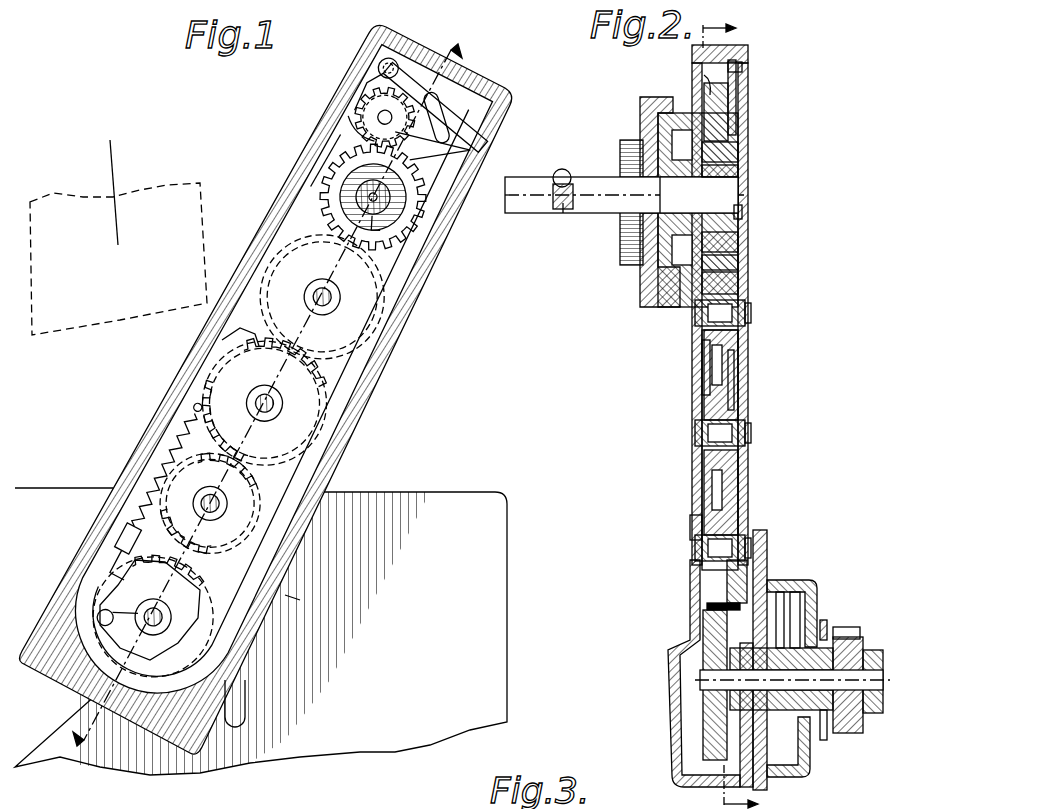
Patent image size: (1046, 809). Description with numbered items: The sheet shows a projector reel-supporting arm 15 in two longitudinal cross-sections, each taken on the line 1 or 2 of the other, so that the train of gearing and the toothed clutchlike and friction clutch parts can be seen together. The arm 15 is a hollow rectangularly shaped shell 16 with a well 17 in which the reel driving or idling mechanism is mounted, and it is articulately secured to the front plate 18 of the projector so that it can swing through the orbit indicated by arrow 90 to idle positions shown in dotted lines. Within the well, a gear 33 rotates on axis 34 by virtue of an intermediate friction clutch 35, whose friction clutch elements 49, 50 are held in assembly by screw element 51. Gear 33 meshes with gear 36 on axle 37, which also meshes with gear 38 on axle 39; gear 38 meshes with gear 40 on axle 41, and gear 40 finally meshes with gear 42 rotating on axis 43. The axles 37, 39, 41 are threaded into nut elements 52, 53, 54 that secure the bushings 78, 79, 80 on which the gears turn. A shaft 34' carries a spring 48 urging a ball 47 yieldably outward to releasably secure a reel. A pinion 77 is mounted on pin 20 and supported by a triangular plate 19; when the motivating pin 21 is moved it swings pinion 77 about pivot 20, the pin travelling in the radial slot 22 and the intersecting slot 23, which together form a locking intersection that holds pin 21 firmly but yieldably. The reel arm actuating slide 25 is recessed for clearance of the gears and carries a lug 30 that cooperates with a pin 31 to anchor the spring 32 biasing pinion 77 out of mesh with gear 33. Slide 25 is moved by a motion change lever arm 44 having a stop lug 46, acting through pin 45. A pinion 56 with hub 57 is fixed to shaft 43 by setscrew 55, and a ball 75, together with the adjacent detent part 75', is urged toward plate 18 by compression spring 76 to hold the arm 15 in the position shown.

In FIG. 2, the section line 1— 1 is at (731, 412).
In FIG. 1, the section line 2— 2 is at (276, 401).
In FIG. 1, the reel-supporting arm 15 is at (504, 83).
In FIG. 2, the reel-supporting arm 15 is at (686, 374).
In FIG. 1, the hollow rectangularly shaped shell 16 is at (80, 190).
In FIG. 2, the hollow rectangularly shaped shell 16 is at (690, 398).
In FIG. 1, the well 17 is at (483, 110).
In FIG. 2, the well 17 is at (705, 367).
In FIG. 1, the front plate 18 is at (455, 495).
In FIG. 2, the front plate 18 is at (762, 550).
In FIG. 1, the triangular plate 19 is at (405, 95).
In FIG. 2, the triangular plate 19 is at (735, 92).
In FIG. 1, the pin 20 is at (393, 58).
In FIG. 2, the pin 20 is at (744, 82).
In FIG. 1, the motivating pin 21 is at (418, 190).
In FIG. 2, the motivating pin 21 is at (740, 120).
In FIG. 1, the radial slot 22 is at (433, 115).
In FIG. 1, the slot 23 is at (470, 150).
In FIG. 1, the reel arm actuating slide 25 is at (342, 328).
In FIG. 2, the reel arm actuating slide 25 is at (747, 252).
In FIG. 1, the lug 30 is at (130, 496).
In FIG. 1, the pin 31 is at (173, 394).
In FIG. 1, the spring 32 is at (160, 433).
In FIG. 1, the gear 33 is at (284, 173).
In FIG. 2, the gear 33 is at (748, 152).
In FIG. 1, the axis 34 is at (407, 209).
In FIG. 2, the axis 34 is at (748, 180).
In FIG. 2, the shaft 34' is at (625, 202).
In FIG. 1, the intermediate friction clutch 35 is at (338, 175).
In FIG. 2, the intermediate friction clutch 35 is at (699, 195).
In FIG. 1, the gear 36 is at (330, 330).
In FIG. 2, the gear 36 is at (747, 270).
In FIG. 1, the axle 37 is at (337, 298).
In FIG. 2, the axle 37 is at (692, 322).
In FIG. 1, the gear 38 is at (310, 460).
In FIG. 2, the gear 38 is at (740, 388).
In FIG. 1, the axle 39 is at (275, 404).
In FIG. 2, the axle 39 is at (688, 438).
In FIG. 1, the gear 40 is at (165, 470).
In FIG. 2, the gear 40 is at (722, 505).
In FIG. 1, the axle 41 is at (218, 503).
In FIG. 2, the axle 41 is at (693, 550).
In FIG. 1, the gear 42 is at (150, 558).
In FIG. 2, the gear 42 is at (700, 625).
In FIG. 1, the axis 43 is at (155, 625).
In FIG. 2, the axis 43 is at (702, 682).
In FIG. 1, the motion change lever arm 44 is at (300, 600).
In FIG. 2, the motion change lever arm 44 is at (824, 620).
In FIG. 1, the pin 45 is at (112, 616).
In FIG. 1, the stop lug 46 is at (242, 714).
In FIG. 2, the stop lug 46 is at (824, 740).
In FIG. 2, the ball 47 is at (567, 150).
In FIG. 2, the spring 48 is at (568, 222).
In FIG. 2, the friction clutch element 49 is at (655, 138).
In FIG. 2, the friction clutch element 50 is at (650, 103).
In FIG. 2, the screw element 51 is at (746, 212).
In FIG. 2, the nut element 52 is at (752, 314).
In FIG. 2, the nut element 53 is at (752, 428).
In FIG. 2, the nut element 54 is at (752, 528).
In FIG. 2, the setscrew 55 is at (852, 640).
In FIG. 2, the pinion 56 is at (846, 630).
In FIG. 2, the hub 57 is at (872, 713).
In FIG. 2, the ball 75 is at (817, 600).
In FIG. 2, the bracket arm 75' is at (798, 597).
In FIG. 2, the compression spring 76 is at (815, 598).
In FIG. 1, the pinion 77 is at (355, 112).
In FIG. 2, the pinion 77 is at (712, 82).
In FIG. 2, the bushing 78 is at (747, 290).
In FIG. 2, the bushing 79 is at (736, 412).
In FIG. 2, the bushing 80 is at (690, 524).
In FIG. 1, the arrow 90 is at (114, 153).